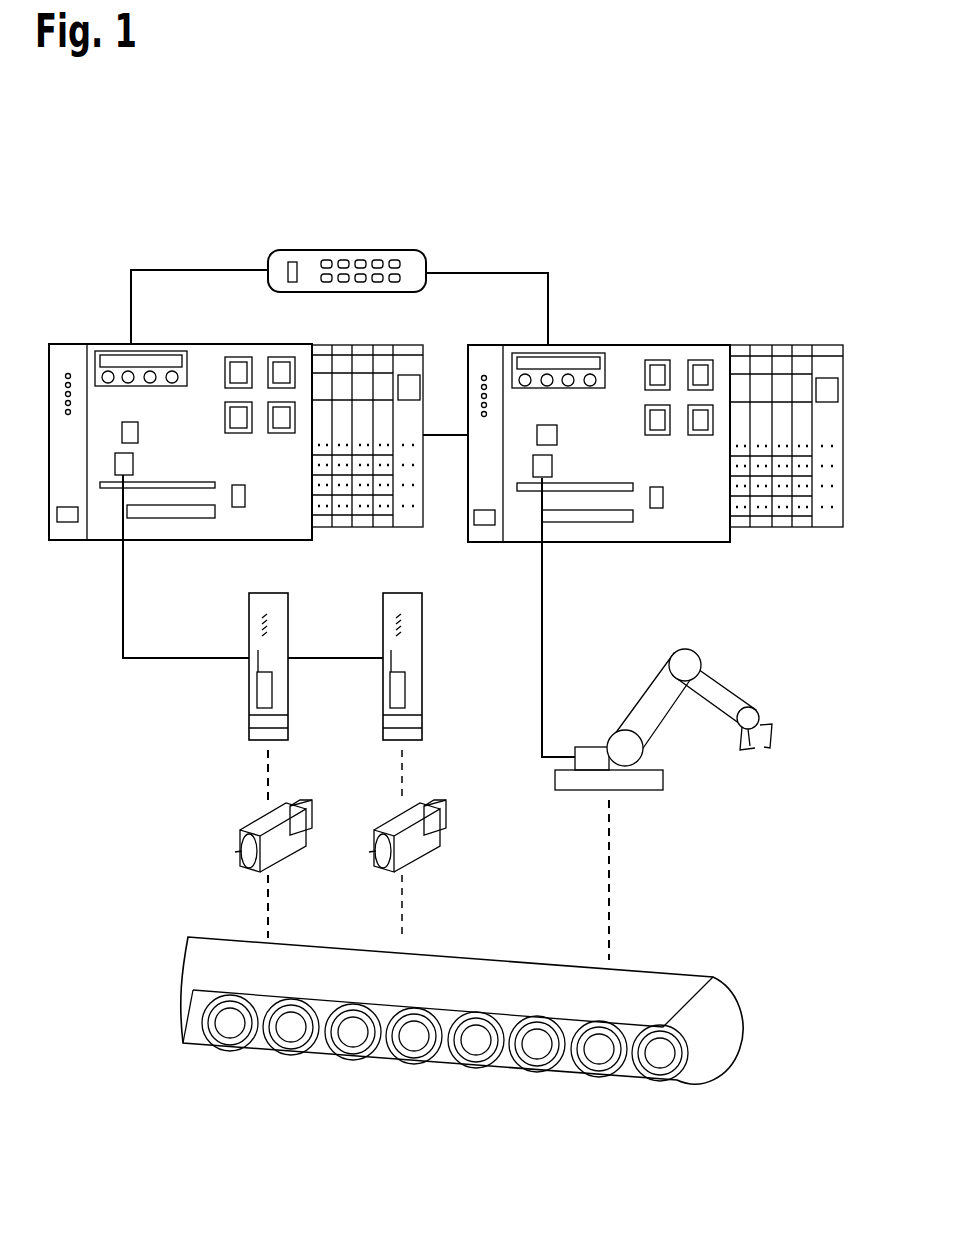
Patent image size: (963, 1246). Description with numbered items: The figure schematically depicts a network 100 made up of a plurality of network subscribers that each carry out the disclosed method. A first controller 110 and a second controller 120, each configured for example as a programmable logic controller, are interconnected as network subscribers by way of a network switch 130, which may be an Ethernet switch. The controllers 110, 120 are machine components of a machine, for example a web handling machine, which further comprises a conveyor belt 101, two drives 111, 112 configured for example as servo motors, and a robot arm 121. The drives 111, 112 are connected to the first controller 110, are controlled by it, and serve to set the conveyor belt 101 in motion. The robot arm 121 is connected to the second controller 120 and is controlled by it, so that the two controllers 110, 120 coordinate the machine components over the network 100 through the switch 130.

The network 100 is at (773, 910).
The conveyor belt 101 is at (670, 975).
The first controller 110 is at (63, 541).
The drive 111 is at (249, 718).
The drive 112 is at (422, 718).
The second controller 120 is at (826, 345).
The robot arm 121 is at (727, 687).
The network switch 130 is at (356, 250).